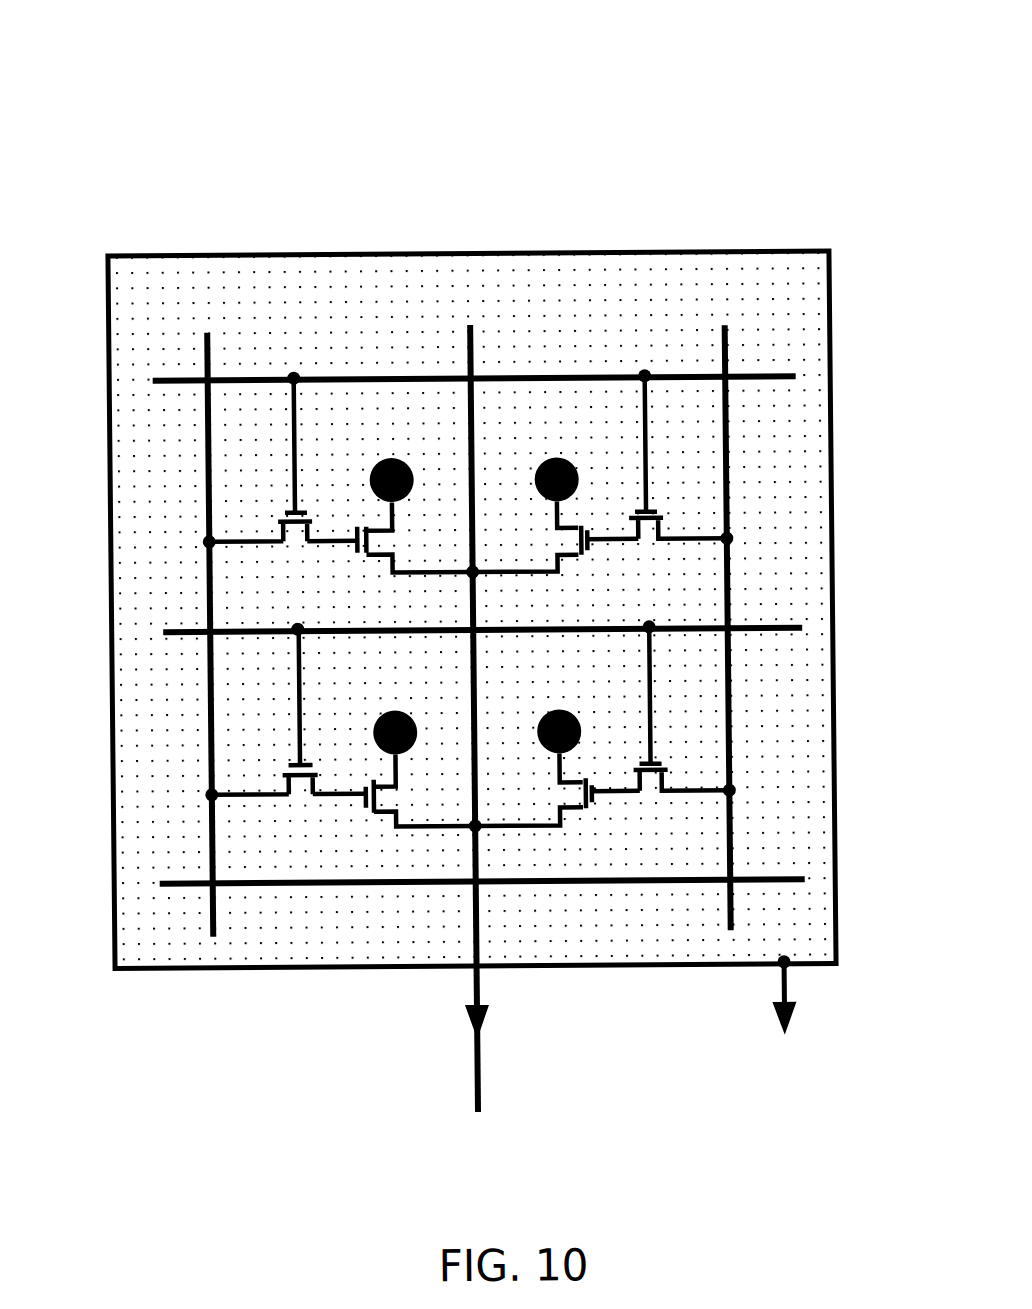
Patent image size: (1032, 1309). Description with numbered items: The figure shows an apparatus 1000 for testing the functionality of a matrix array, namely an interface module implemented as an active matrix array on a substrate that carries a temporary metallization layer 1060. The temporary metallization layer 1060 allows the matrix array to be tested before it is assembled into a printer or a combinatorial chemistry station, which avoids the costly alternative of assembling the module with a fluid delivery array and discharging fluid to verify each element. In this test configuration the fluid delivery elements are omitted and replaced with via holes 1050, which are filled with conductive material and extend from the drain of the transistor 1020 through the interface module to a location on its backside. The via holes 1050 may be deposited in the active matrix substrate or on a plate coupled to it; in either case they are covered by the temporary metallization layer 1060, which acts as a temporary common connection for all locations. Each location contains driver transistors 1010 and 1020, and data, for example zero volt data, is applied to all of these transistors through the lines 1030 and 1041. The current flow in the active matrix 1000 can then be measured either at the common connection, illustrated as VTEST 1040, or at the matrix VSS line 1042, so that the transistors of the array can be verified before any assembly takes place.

The apparatus 1000 is at (604, 141).
The transistor 1010 is at (300, 528).
The transistor 1020 is at (368, 565).
The line 1030 is at (770, 376).
The VTEST 1040 is at (786, 985).
The line 1041 is at (207, 915).
The matrix VSS line 1042 is at (470, 977).
The via hole 1050 is at (414, 479).
The temporary metallization layer 1060 is at (710, 291).